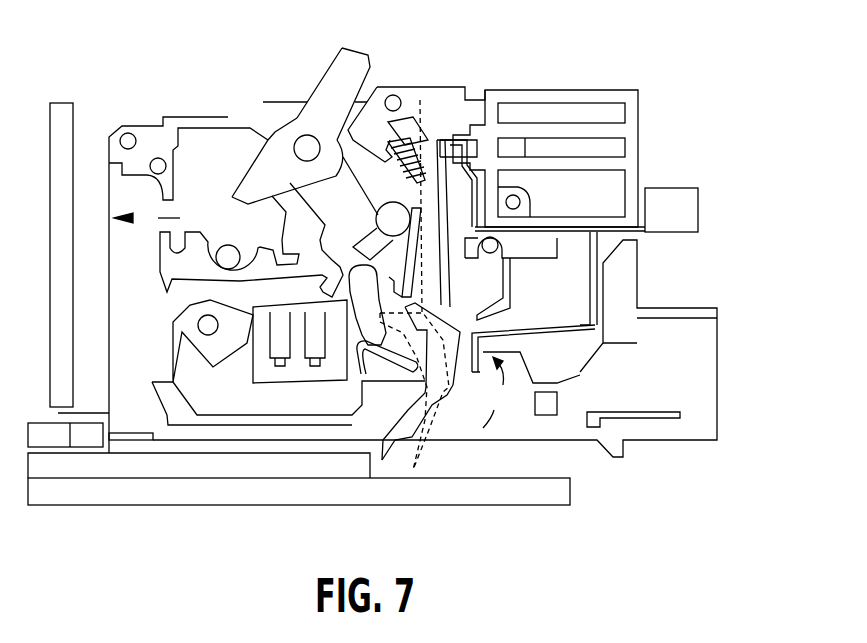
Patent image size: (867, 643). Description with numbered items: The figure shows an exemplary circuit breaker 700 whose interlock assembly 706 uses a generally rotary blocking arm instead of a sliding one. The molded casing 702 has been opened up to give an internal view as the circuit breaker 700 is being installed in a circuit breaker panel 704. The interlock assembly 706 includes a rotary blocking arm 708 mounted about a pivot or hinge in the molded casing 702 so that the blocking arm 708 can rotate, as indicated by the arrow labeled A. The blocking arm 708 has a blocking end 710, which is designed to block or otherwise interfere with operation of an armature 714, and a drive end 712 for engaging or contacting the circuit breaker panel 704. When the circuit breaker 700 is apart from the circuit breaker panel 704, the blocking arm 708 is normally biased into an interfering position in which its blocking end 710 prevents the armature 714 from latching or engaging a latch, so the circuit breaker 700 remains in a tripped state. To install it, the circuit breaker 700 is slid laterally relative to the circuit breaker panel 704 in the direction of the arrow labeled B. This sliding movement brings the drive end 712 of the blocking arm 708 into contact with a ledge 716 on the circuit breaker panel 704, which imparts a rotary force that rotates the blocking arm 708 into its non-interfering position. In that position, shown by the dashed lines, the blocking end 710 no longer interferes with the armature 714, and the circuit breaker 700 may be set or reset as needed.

The circuit breaker 700 is at (690, 100).
The molded casing 702 is at (575, 88).
The circuit breaker panel 704 is at (315, 506).
The interlock assembly 706 is at (412, 382).
The rotary blocking arm 708 is at (487, 352).
The blocking end 710 is at (420, 100).
The drive end 712 is at (398, 440).
The armature 714 is at (338, 145).
The ledge 716 is at (372, 462).